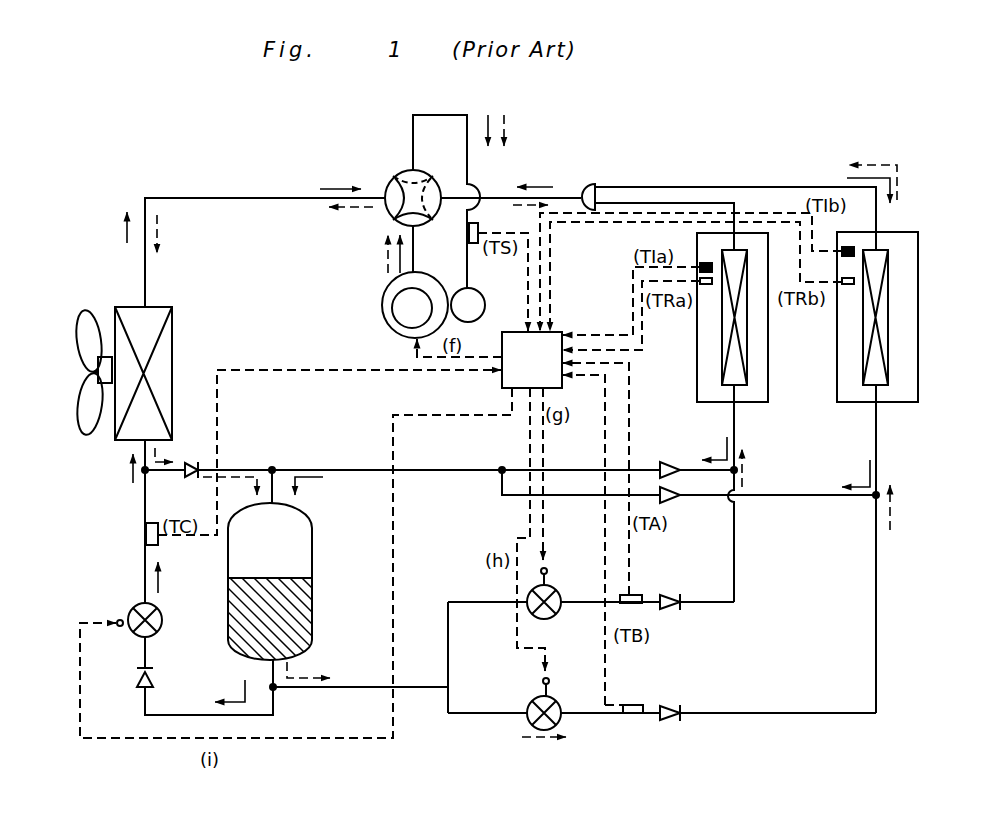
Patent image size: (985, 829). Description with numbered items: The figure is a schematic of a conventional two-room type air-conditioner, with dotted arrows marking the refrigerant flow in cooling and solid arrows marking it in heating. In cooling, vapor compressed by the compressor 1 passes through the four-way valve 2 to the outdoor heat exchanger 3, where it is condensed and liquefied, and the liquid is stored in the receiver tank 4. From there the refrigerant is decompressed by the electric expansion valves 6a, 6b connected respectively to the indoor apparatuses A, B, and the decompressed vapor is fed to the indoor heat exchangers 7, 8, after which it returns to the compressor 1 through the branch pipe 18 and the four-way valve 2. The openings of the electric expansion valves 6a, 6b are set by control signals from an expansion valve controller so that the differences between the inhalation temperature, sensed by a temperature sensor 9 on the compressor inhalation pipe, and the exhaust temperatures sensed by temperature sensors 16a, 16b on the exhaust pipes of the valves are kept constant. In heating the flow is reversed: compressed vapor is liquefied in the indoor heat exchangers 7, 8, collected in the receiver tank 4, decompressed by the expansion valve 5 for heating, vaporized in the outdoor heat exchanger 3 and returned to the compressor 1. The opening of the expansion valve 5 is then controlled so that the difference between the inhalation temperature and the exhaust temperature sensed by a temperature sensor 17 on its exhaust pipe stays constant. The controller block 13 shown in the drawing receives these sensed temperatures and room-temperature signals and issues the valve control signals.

The compressor 1 is at (390, 297).
The four-way valve 2 is at (392, 178).
The outdoor heat exchanger 3 is at (172, 320).
The receiver tank 4 is at (310, 600).
The expansion valve for heating 5 is at (163, 625).
The electric expansion valve 6a is at (548, 587).
The electric expansion valve 6b is at (549, 698).
The indoor heat exchanger 7 is at (747, 350).
The indoor heat exchanger 8 is at (888, 355).
The temperature sensor 9 is at (470, 296).
The controller 13 is at (558, 330).
The temperature sensor 16a is at (640, 595).
The temperature sensor 16b is at (642, 703).
The temperature sensor 17 is at (146, 533).
The branch pipe 18 is at (588, 181).
The indoor apparatus A is at (768, 402).
The indoor apparatus B is at (917, 402).